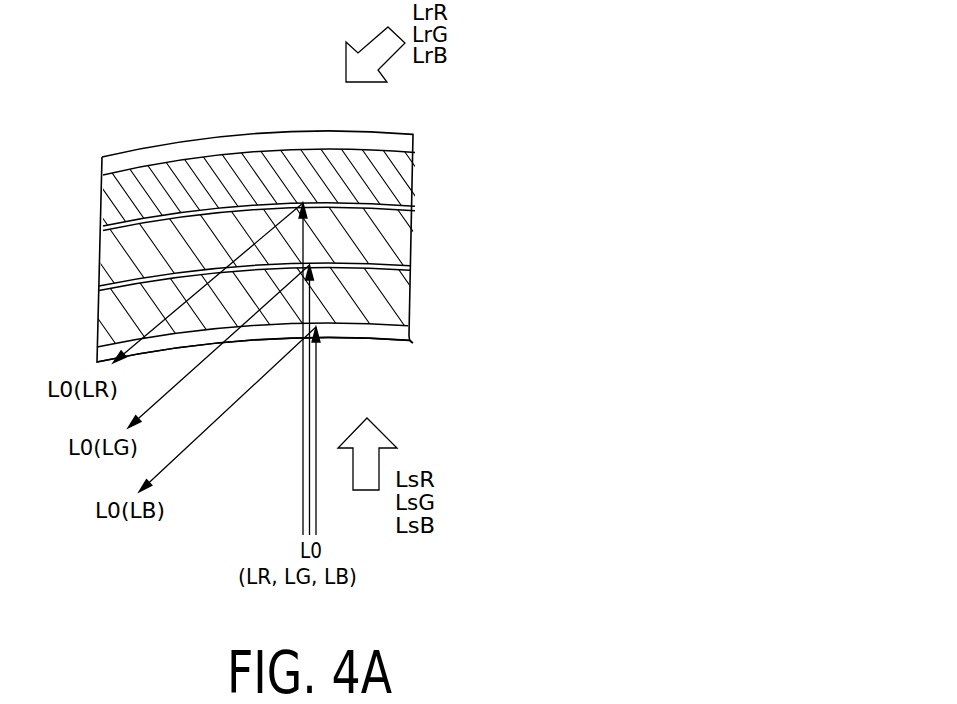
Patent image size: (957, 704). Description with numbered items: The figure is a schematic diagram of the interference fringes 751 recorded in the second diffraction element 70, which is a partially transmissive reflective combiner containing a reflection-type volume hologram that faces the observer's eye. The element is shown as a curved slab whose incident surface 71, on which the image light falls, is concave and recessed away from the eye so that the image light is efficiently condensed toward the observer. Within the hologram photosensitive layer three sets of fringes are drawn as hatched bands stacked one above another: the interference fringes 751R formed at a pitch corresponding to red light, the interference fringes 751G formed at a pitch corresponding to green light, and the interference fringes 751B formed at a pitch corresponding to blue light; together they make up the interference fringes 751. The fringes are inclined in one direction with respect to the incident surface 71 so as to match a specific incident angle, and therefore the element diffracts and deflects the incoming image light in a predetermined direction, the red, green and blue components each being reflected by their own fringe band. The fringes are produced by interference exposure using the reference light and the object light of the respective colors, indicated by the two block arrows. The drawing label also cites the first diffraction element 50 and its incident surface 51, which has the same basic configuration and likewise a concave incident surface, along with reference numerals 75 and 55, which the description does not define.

The second diffraction element 70 is at (294, 244).
The dichroic layer stack 75 is at (294, 244).
The first diffraction element 50 is at (294, 244).
The dichroic layer stack 55 is at (400, 131).
The interference fringes 751 is at (294, 247).
The interference fringes for red light 751R is at (415, 182).
The interference fringes for green light 751G is at (408, 238).
The interference fringes for blue light 751B is at (260, 305).
The incident surface 71 is at (282, 372).
The incident surface 51 is at (389, 345).